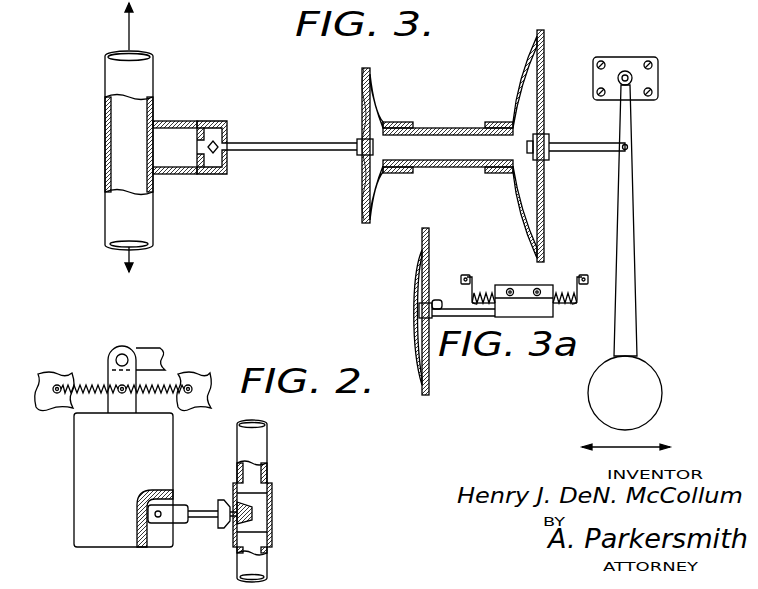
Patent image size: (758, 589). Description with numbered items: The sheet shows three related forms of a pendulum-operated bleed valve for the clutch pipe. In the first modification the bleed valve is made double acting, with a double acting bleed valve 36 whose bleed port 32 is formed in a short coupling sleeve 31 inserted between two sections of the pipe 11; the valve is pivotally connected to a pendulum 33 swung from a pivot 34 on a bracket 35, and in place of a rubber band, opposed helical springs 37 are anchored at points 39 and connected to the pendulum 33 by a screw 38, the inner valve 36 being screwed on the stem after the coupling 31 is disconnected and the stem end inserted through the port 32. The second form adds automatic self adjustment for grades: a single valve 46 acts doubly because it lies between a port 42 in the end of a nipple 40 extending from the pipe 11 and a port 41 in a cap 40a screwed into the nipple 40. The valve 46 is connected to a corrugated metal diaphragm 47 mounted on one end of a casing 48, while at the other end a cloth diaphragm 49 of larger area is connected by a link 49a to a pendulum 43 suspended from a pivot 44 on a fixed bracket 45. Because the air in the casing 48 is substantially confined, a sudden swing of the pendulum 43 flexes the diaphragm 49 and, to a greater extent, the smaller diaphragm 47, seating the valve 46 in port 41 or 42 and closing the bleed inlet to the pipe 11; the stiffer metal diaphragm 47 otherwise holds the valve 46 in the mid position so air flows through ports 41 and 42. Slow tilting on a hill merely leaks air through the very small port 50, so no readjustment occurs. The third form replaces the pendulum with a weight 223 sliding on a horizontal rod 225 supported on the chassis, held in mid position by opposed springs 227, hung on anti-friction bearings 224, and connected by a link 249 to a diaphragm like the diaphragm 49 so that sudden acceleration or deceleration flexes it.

In FIG. 3, the pipe 11 is at (153, 70).
In FIG. 2, the pipe 11 is at (262, 436).
In FIG. 3, the nipple 40 is at (190, 176).
In FIG. 3, the cap 40a is at (213, 174).
In FIG. 3, the port in cap 41 is at (224, 140).
In FIG. 3, the port in nipple 42 is at (203, 134).
In FIG. 3, the valve 46 is at (218, 152).
In FIG. 3, the corrugated metal diaphragm 47 is at (362, 172).
In FIG. 3, the casing 48 is at (463, 170).
In FIG. 3, the small port 50 is at (455, 124).
In FIG. 3, the cloth diaphragm 49 is at (546, 114).
In FIG. 3A, the cloth diaphragm 49 is at (429, 268).
In FIG. 3, the link 49a is at (577, 151).
In FIG. 3, the pivot 44 is at (627, 72).
In FIG. 3, the fixed bracket 45 is at (660, 78).
In FIG. 3, the pendulum 43 is at (633, 264).
In FIG. 3A, the link 249 is at (421, 306).
In FIG. 3A, the weight 223 is at (556, 312).
In FIG. 3A, the horizontal rod 225 is at (520, 291).
In FIG. 3A, the anti-friction bearings 224 is at (510, 288).
In FIG. 3A, the opposed springs 227 is at (480, 290).
In FIG. 2, the pendulum 33 is at (80, 487).
In FIG. 2, the pivot 34 is at (122, 353).
In FIG. 2, the bracket 35 is at (157, 352).
In FIG. 2, the opposed helical springs 37 is at (94, 384).
In FIG. 2, the anchor points 39 is at (56, 387).
In FIG. 2, the screw 38 is at (121, 394).
In FIG. 2, the bleed port 32 is at (226, 522).
In FIG. 2, the double acting bleed valve 36 is at (232, 506).
In FIG. 2, the coupling sleeve 31 is at (272, 504).